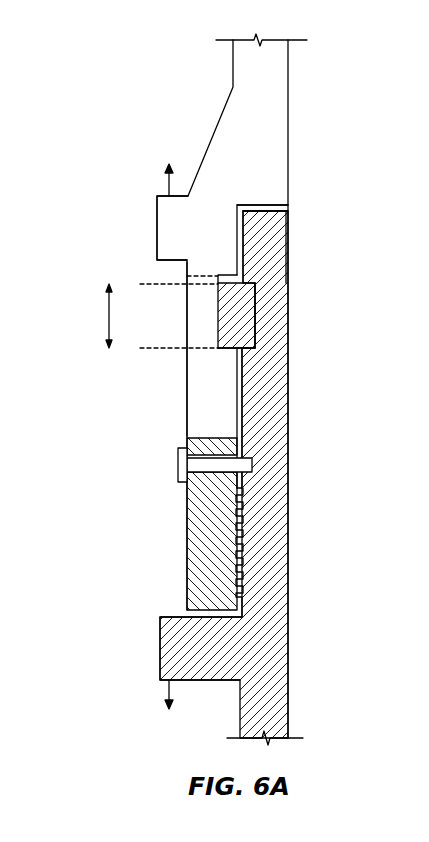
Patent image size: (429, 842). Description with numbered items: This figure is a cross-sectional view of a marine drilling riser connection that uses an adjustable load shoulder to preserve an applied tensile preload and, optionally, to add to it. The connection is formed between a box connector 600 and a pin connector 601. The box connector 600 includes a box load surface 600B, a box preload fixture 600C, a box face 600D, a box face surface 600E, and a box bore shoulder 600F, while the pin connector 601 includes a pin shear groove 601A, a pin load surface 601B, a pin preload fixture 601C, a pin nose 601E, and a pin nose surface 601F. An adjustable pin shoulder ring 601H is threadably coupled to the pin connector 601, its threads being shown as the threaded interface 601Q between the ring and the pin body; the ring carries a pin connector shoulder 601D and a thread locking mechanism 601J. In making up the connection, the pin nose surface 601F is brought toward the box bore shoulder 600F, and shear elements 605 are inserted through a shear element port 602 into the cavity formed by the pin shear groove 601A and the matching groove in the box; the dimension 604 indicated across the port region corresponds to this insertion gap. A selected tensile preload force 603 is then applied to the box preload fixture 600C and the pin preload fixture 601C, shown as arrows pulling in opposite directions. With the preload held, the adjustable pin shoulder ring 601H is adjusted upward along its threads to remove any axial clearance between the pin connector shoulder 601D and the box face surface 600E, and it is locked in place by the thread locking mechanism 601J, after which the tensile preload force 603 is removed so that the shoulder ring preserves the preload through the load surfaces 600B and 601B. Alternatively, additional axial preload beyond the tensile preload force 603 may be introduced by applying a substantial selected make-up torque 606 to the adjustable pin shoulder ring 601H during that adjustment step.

The box connector 600 is at (272, 124).
The box load surface 600B is at (227, 352).
The box preload fixture 600C is at (157, 215).
The box face 600D is at (197, 385).
The box face surface 600E is at (197, 440).
The box bore shoulder 600F is at (258, 205).
The pin connector 601 is at (272, 662).
The pin shear groove 601A is at (229, 274).
The pin load surface 601B is at (257, 279).
The pin preload fixture 601C is at (167, 645).
The pin connector shoulder 601D is at (255, 445).
The pin nose 601E is at (272, 250).
The pin nose surface 601F is at (267, 213).
The adjustable pin shoulder ring 601H is at (205, 518).
The thread locking mechanism 601J is at (178, 465).
The threads 601Q is at (245, 530).
The shear element port 602 is at (197, 322).
The tensile preload force 603 is at (169, 186).
The gap distance 604 is at (109, 315).
The shear elements 605 is at (245, 312).
The make-up torque 606 is at (220, 576).